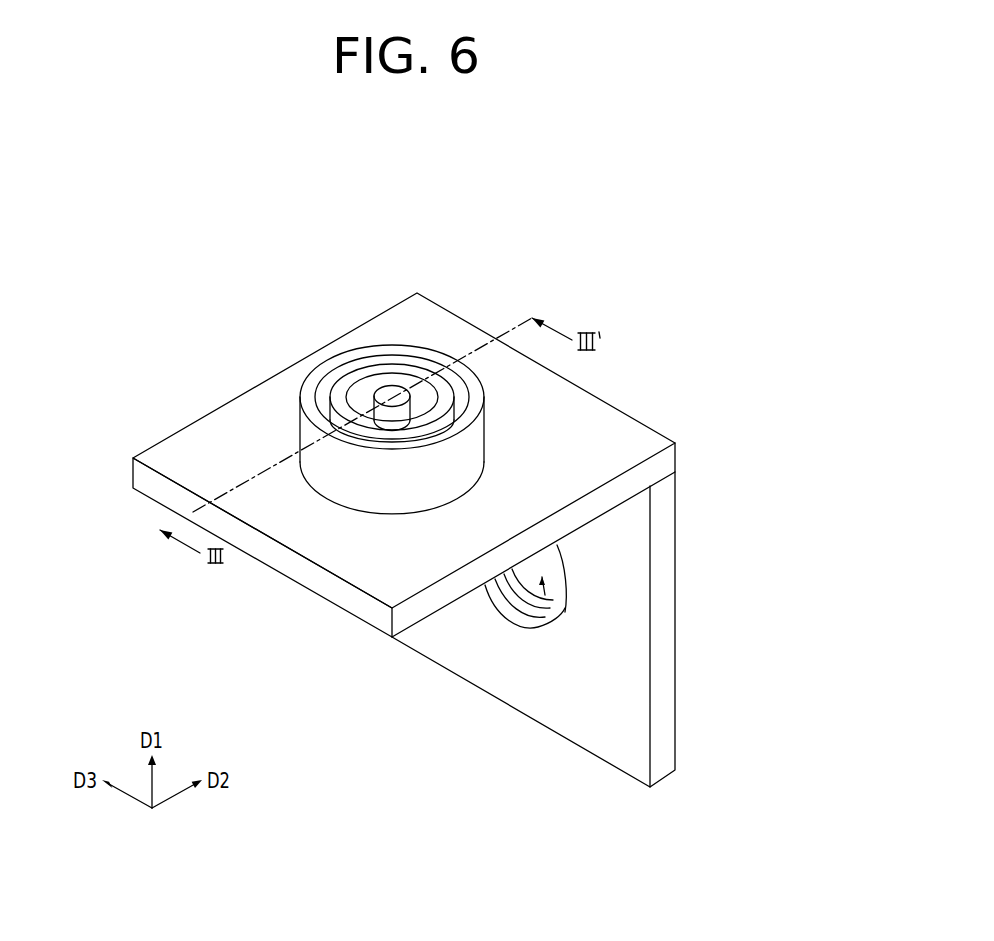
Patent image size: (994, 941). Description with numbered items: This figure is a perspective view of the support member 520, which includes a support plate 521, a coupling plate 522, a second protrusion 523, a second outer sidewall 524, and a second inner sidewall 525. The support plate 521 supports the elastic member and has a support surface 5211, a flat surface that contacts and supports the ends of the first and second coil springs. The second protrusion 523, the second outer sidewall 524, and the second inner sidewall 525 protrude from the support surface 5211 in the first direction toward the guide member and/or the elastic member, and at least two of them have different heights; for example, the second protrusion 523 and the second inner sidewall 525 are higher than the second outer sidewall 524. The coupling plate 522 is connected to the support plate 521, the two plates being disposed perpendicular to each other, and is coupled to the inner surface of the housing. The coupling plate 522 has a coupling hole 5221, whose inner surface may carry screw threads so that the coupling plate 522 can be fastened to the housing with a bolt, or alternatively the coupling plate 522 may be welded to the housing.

The support member 520 is at (421, 493).
The support plate 521 is at (376, 476).
The support surface 5211 is at (370, 575).
The coupling plate 522 is at (578, 629).
The coupling hole 5221 is at (556, 608).
The second protrusion 523 is at (385, 395).
The second outer sidewall 524 is at (372, 389).
The second inner sidewall 525 is at (338, 403).